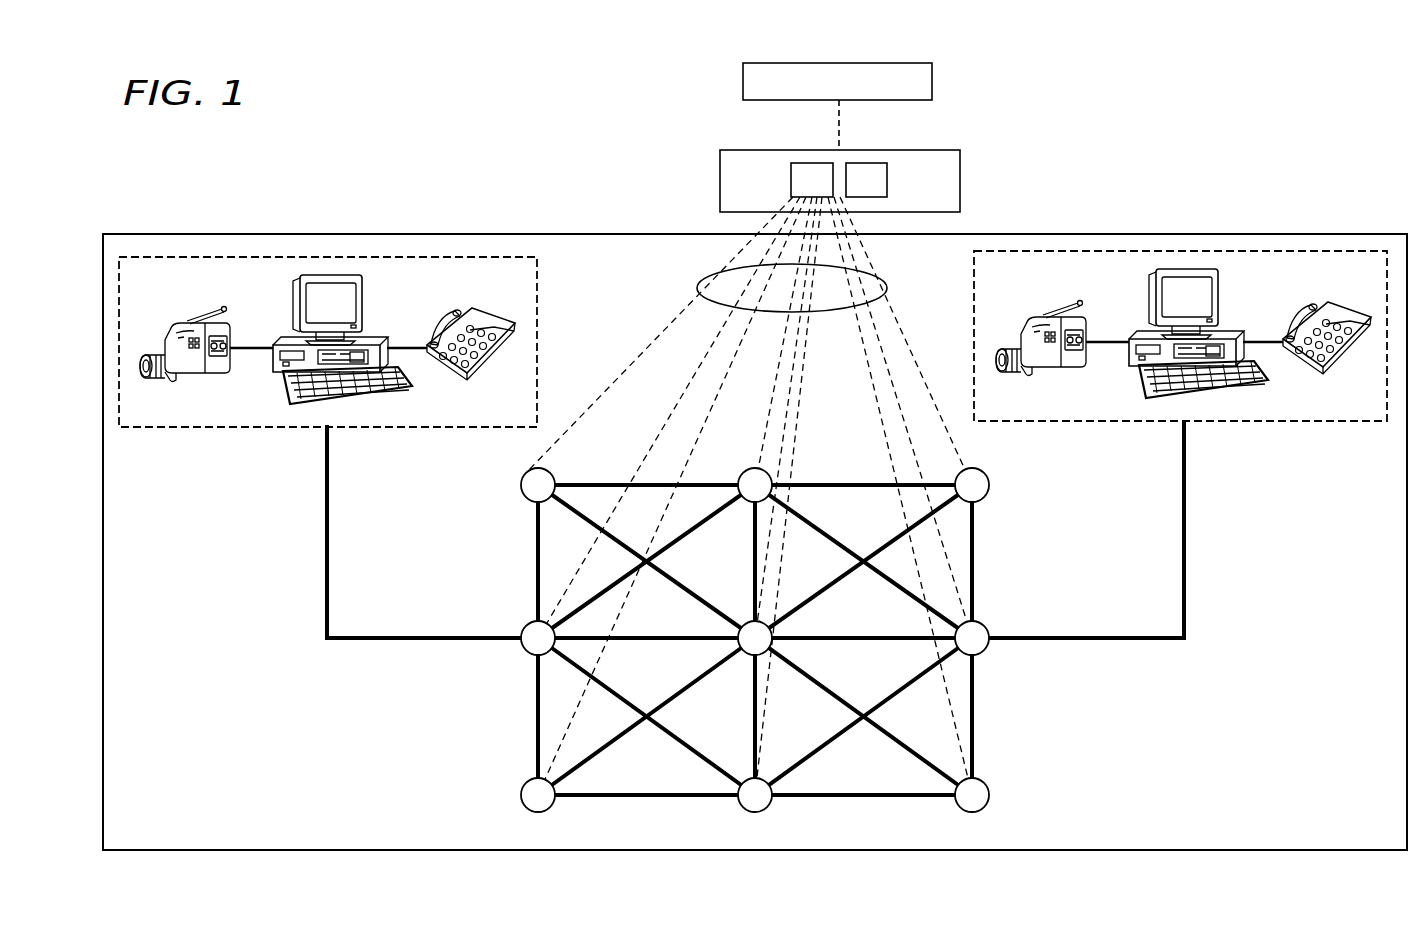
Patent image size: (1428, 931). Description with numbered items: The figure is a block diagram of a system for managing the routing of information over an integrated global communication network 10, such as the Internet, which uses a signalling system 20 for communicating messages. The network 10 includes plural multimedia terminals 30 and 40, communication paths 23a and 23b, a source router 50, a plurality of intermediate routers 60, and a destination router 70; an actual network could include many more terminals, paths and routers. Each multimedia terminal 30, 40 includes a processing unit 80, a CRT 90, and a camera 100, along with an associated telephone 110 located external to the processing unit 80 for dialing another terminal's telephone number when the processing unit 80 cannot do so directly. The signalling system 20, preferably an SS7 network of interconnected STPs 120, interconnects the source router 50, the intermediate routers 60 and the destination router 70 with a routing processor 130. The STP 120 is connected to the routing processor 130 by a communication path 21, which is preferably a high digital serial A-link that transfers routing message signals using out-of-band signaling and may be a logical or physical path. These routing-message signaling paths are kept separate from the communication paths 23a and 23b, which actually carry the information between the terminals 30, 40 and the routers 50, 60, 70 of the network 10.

The integrated global communication network 10 is at (435, 234).
The signalling system 20 is at (720, 178).
The communication path 21 is at (839, 128).
The communication path 23a is at (327, 558).
The communication path 23b is at (662, 469).
The multimedia terminal 30 is at (538, 341).
The multimedia terminal 40 is at (974, 340).
The source router 50 is at (523, 625).
The intermediate router 60 is at (521, 485).
The destination router 70 is at (991, 626).
The processing unit 80 is at (285, 380).
The CRT 90 is at (362, 292).
The camera 100 is at (188, 320).
The telephone 110 is at (500, 318).
The STP 120 is at (791, 178).
The routing processor 130 is at (743, 82).